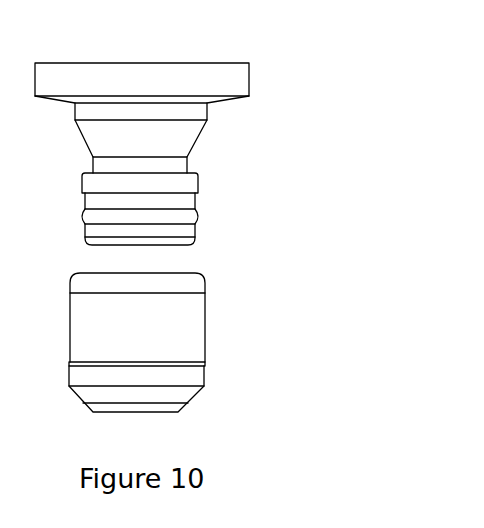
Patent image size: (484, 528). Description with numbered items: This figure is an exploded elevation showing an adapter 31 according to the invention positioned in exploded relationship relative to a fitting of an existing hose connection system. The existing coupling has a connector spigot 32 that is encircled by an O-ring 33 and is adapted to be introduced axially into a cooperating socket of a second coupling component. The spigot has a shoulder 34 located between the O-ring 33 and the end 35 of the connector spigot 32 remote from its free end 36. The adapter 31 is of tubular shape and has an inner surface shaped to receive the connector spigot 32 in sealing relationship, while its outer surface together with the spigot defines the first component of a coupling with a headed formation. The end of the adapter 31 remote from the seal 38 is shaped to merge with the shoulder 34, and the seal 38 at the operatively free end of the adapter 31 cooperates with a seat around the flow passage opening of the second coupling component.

The end of the connector spigot 35 is at (148, 113).
The shoulder 34 is at (148, 173).
The connector spigot 32 is at (147, 202).
The O-ring 33 is at (147, 217).
The free end 36 is at (147, 245).
The adapter 31 is at (143, 337).
The seal 38 is at (153, 390).